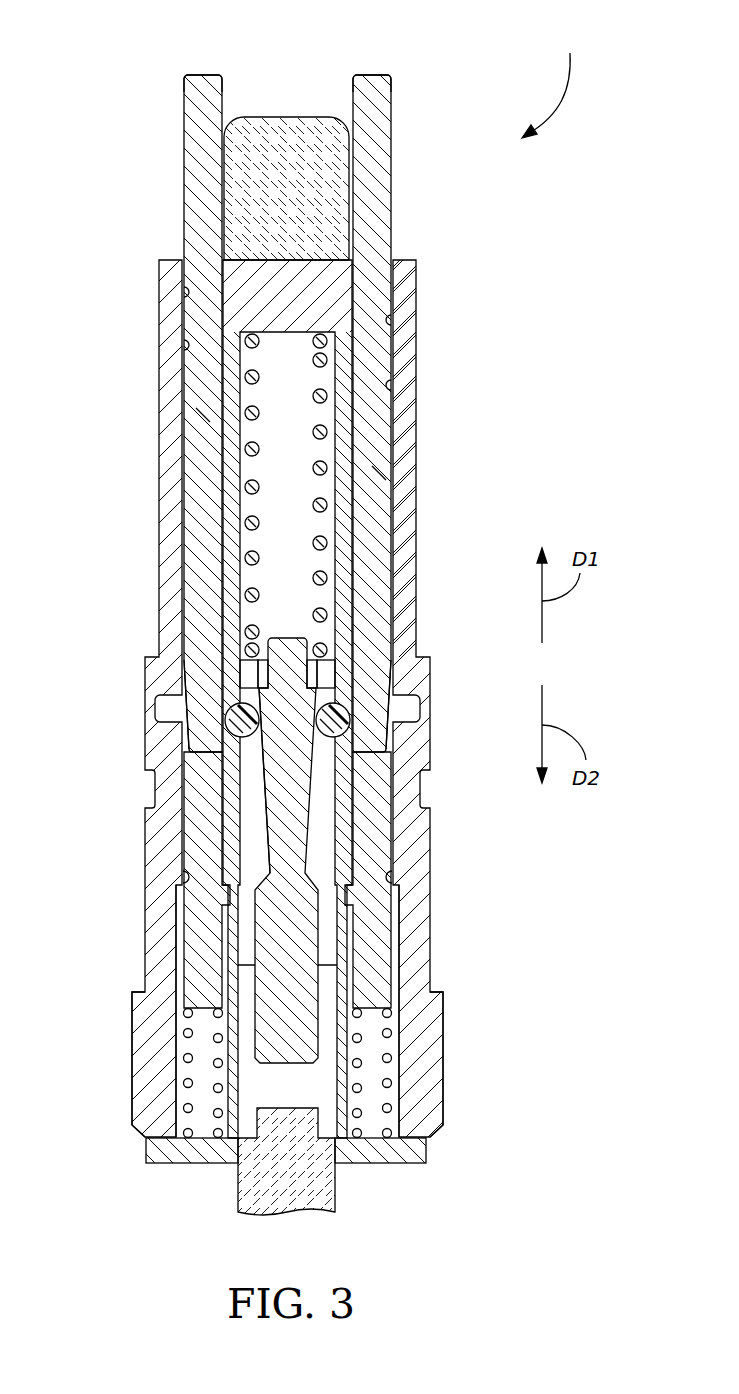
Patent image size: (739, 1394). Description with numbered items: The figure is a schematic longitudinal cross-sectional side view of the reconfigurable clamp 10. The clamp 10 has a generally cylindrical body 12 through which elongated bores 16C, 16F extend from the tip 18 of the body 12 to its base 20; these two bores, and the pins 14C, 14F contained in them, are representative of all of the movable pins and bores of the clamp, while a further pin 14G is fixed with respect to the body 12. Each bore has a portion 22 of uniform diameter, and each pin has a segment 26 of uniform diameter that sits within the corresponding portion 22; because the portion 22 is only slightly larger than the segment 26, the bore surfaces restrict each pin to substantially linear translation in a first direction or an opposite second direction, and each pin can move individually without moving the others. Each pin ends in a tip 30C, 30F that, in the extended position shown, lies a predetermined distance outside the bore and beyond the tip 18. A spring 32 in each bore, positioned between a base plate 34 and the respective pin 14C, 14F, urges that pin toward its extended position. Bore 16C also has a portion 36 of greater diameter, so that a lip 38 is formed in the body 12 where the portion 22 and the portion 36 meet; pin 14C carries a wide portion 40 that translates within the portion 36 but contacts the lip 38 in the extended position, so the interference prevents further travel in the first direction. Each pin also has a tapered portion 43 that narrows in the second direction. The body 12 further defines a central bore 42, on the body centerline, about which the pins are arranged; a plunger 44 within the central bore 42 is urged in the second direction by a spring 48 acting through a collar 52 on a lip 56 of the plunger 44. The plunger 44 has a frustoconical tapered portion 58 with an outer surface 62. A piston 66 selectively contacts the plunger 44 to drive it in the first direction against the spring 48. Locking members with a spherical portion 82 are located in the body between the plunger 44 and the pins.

The reconfigurable clamp 10 is at (553, 84).
The body 12 is at (407, 424).
The pin 14F is at (184, 108).
The pin 14C is at (391, 108).
The pin 14G is at (287, 115).
The bore 16F is at (184, 292).
The bore 16C is at (388, 320).
The tip 18 is at (404, 260).
The base 20 is at (433, 1133).
The portion 22 is at (184, 345).
The segment 26 is at (203, 415).
The tip 30F is at (203, 72).
The tip 30C is at (372, 72).
The spring 32 is at (390, 1033).
The base plate 34 is at (427, 1153).
The portion 36 is at (393, 977).
The lip 38 is at (192, 867).
The wide portion 40 is at (393, 897).
The central bore 42 is at (245, 552).
The tapered portion 43 is at (200, 718).
The plunger 44 is at (318, 928).
The spring 48 is at (322, 505).
The collar 52 is at (327, 670).
The lip 56 is at (312, 685).
The tapered portion 58 is at (287, 833).
The outer surface 62 is at (265, 790).
The piston 66 is at (283, 1172).
The spherical portion 82 is at (240, 716).